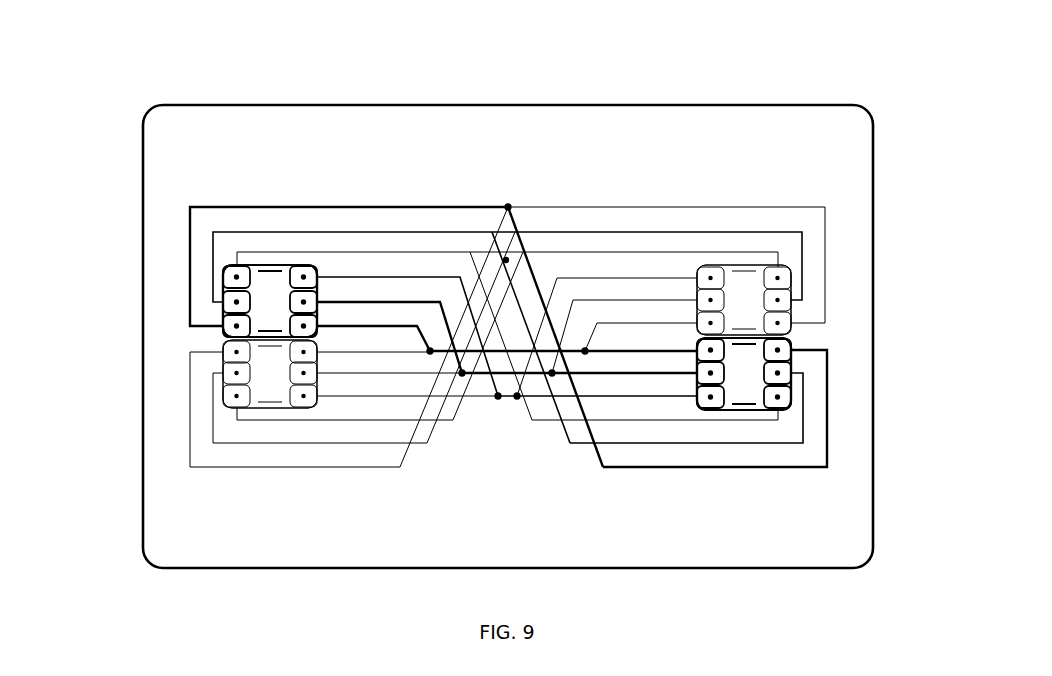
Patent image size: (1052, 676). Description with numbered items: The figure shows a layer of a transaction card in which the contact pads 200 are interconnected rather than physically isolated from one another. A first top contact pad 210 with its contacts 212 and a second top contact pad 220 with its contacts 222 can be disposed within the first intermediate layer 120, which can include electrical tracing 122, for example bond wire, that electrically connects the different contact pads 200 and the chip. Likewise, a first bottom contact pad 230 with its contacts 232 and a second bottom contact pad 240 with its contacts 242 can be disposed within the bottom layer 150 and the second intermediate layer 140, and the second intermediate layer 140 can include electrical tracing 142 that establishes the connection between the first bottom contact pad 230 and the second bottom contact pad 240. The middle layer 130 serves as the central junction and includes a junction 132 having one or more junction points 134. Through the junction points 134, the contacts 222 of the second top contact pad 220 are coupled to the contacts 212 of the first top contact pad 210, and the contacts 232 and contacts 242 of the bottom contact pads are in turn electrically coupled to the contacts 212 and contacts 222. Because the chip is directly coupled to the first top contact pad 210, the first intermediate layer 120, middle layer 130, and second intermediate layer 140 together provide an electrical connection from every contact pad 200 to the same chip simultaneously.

The first intermediate layer 120 is at (835, 152).
The electrical tracing 122 is at (212, 238).
The middle layer 130 is at (163, 92).
The junction 132 is at (552, 180).
The junction points 134 is at (506, 260).
The second intermediate layer 140 is at (123, 147).
The electrical tracing 142 is at (298, 465).
The bottom layer 150 is at (220, 100).
The contact pads 200 is at (272, 306).
The first top contact pad 210 is at (222, 286).
The contacts 212 is at (220, 308).
The second top contact pad 220 is at (762, 387).
The contacts 222 is at (783, 375).
The first bottom contact pad 230 is at (258, 374).
The contacts 232 is at (238, 397).
The second bottom contact pad 240 is at (753, 272).
The contacts 242 is at (783, 278).